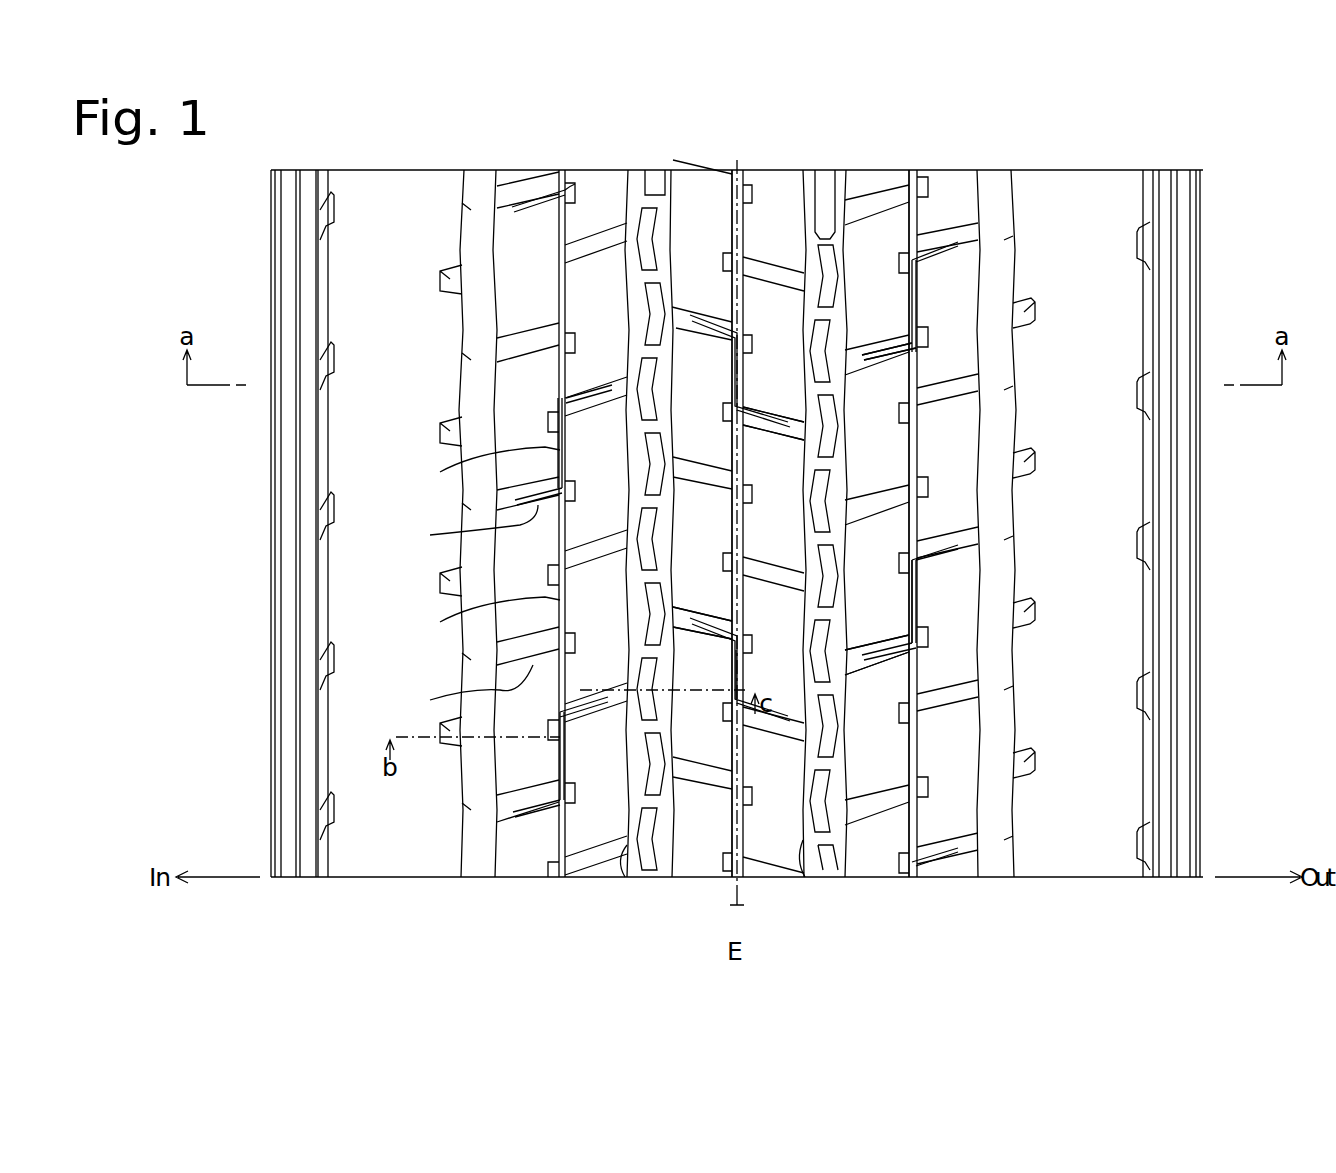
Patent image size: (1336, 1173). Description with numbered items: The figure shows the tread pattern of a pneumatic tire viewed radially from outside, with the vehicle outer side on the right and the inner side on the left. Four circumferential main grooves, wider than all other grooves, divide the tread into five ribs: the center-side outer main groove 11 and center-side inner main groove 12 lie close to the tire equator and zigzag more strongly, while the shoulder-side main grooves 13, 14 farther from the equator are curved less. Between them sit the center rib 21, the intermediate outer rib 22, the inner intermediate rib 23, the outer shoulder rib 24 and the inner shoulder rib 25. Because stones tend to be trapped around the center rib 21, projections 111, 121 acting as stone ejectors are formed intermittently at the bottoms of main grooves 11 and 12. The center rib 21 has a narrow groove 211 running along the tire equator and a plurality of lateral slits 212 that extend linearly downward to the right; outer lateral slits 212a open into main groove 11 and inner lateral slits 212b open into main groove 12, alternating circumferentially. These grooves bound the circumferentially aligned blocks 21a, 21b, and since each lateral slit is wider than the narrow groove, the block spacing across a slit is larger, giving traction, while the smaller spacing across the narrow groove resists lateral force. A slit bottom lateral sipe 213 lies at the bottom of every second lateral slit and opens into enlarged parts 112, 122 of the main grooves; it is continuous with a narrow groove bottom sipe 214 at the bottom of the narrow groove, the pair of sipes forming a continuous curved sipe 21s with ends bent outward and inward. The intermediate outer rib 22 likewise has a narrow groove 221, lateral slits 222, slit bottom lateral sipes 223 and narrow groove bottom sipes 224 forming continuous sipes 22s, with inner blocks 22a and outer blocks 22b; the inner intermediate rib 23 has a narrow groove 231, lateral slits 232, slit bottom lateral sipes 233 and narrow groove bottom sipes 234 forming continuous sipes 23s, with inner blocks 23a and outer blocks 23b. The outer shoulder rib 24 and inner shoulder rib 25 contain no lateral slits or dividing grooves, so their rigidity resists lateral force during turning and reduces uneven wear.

The center-side outer main groove 11 is at (835, 865).
The projection 111 is at (800, 850).
The enlarged part 112 is at (790, 410).
The center-side inner main groove 12 is at (640, 870).
The projection 121 is at (605, 830).
The enlarged part 122 is at (690, 310).
The shoulder-side main groove 13 is at (1000, 870).
The shoulder-side main groove 14 is at (478, 850).
The center rib 21 is at (731, 525).
The block 21a is at (775, 240).
The block 21b is at (690, 240).
The narrow groove 211 is at (710, 230).
The lateral slit 212 is at (720, 607).
The outer lateral slit 212a is at (775, 716).
The inner lateral slit 212b is at (705, 790).
The slit bottom lateral sipe 213 is at (720, 620).
The narrow groove bottom sipe 214 is at (735, 685).
The continuous sipe 21s is at (702, 330).
The intermediate outer rib 22 is at (911, 527).
The inner block 22a is at (958, 280).
The outer block 22b is at (870, 240).
The narrow groove 221 is at (900, 230).
The lateral slit 222 is at (905, 660).
The slit bottom lateral sipe 223 is at (935, 545).
The narrow groove bottom sipe 224 is at (905, 600).
The continuous sipe 22s is at (895, 345).
The inner intermediate rib 23 is at (505, 528).
The inner block 23a is at (595, 260).
The outer block 23b is at (518, 200).
The narrow groove 231 is at (525, 235).
The lateral slit 232 is at (520, 535).
The slit bottom lateral sipe 233 is at (585, 395).
The narrow groove bottom sipe 234 is at (545, 460).
The continuous sipe 23s is at (590, 695).
The outer shoulder rib 24 is at (1080, 865).
The inner shoulder rib 25 is at (390, 850).